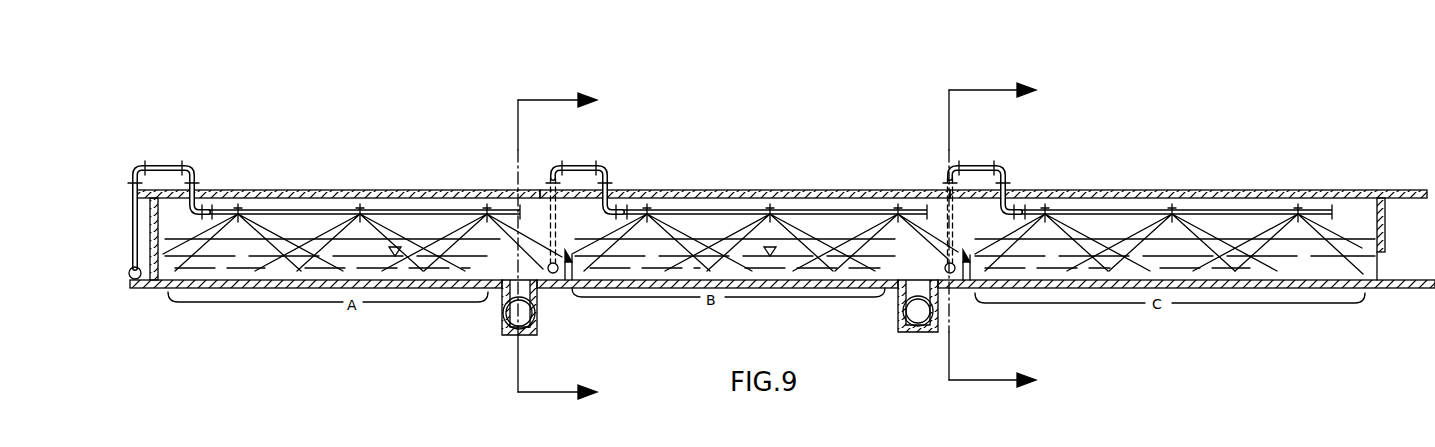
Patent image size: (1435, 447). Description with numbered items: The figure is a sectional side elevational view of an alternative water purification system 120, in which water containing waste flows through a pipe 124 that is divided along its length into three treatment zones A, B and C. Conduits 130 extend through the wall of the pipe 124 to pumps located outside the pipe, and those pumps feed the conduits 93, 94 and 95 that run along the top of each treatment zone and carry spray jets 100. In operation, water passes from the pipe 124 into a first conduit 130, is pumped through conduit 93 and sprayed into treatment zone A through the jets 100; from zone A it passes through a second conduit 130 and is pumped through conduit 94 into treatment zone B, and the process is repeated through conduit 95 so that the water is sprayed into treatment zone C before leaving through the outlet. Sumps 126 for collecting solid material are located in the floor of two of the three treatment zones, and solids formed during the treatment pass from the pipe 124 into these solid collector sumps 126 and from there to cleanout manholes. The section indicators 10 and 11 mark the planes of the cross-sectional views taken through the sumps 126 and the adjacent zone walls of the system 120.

The conduit 93 is at (415, 210).
The conduit 94 is at (740, 208).
The conduit 95 is at (1120, 207).
The spray jets 100 is at (360, 210).
The purification system 120 is at (366, 189).
The pipe 124 is at (848, 188).
The sumps 126 is at (953, 326).
The conduits 130 is at (136, 279).
The section line of FIG. 10 is at (1013, 237).
The section line of FIG. 11 is at (577, 247).